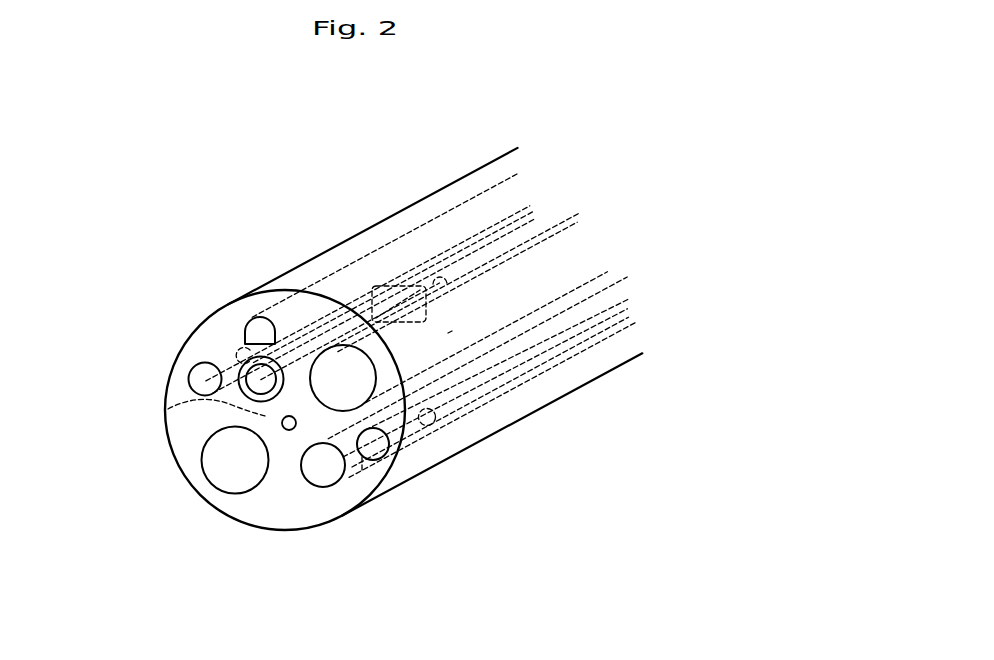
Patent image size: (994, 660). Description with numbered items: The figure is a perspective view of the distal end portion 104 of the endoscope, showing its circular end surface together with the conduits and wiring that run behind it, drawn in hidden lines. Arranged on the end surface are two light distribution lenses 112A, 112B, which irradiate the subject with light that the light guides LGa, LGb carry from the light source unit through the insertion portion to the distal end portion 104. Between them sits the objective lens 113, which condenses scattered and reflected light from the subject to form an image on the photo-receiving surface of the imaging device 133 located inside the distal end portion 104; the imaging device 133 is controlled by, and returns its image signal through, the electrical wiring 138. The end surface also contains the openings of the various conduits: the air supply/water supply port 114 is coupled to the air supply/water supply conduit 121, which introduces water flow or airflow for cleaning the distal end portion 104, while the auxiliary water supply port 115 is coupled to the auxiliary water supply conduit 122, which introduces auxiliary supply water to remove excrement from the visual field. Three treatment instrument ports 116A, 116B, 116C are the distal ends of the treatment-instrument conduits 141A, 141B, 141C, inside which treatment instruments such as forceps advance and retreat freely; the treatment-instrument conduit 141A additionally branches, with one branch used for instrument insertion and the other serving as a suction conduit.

The distal end portion 104 is at (483, 127).
The auxiliary water supply port 115 is at (275, 478).
The air supply/water supply conduit 121 is at (330, 287).
The electrical wiring 138 is at (490, 253).
The imaging device 133 is at (376, 287).
The air supply/water supply port 114 is at (258, 328).
The light guide LGa is at (233, 347).
The light distribution lens 112A is at (204, 378).
The objective lens 113 is at (264, 380).
The treatment-instrument conduit 141B is at (305, 384).
The treatment instrument port 116B is at (220, 470).
The auxiliary water supply conduit 122 is at (290, 428).
The treatment instrument port 116A is at (320, 478).
The treatment-instrument conduit 141A is at (362, 470).
The light distribution lens 112B is at (378, 445).
The treatment instrument port 116C is at (362, 377).
The treatment-instrument conduit 141C is at (448, 333).
The light guide LGb is at (555, 348).